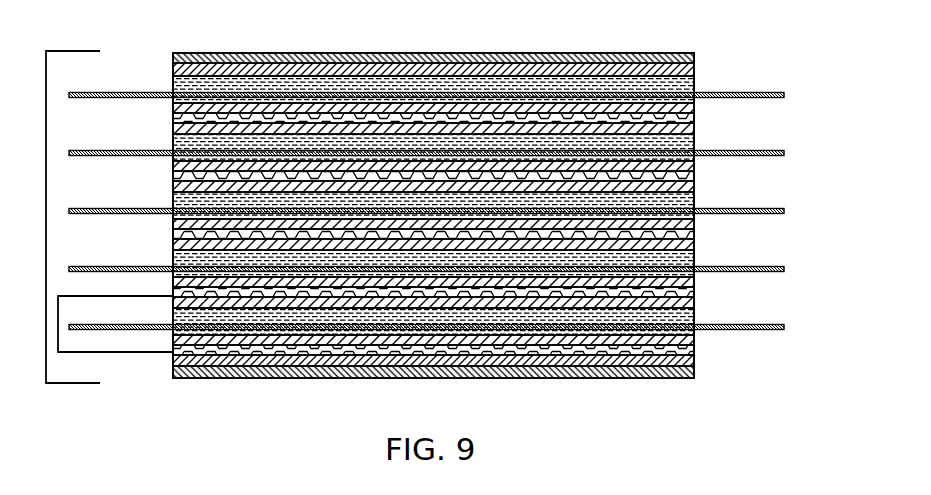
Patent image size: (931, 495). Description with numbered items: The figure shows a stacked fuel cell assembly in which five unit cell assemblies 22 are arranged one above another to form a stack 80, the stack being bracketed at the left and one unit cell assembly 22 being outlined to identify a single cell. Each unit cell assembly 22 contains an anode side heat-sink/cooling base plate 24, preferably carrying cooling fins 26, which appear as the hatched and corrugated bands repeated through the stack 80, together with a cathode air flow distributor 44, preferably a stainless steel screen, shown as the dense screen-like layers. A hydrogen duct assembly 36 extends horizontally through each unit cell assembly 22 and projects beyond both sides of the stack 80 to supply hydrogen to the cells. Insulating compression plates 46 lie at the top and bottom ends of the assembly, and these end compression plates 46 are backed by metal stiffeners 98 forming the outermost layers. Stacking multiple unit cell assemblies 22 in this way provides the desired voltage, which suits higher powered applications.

The unit cell assembly 22 is at (127, 356).
The anode side heat-sink/cooling base plate 24 is at (484, 224).
The cooling fins 26 is at (466, 234).
The hydrogen duct assembly 36 is at (451, 203).
The cathode air flow distributor 44 is at (478, 194).
The insulating compression plate 46 is at (469, 210).
The stack 80 is at (94, 249).
The metal stiffeners 98 is at (451, 214).